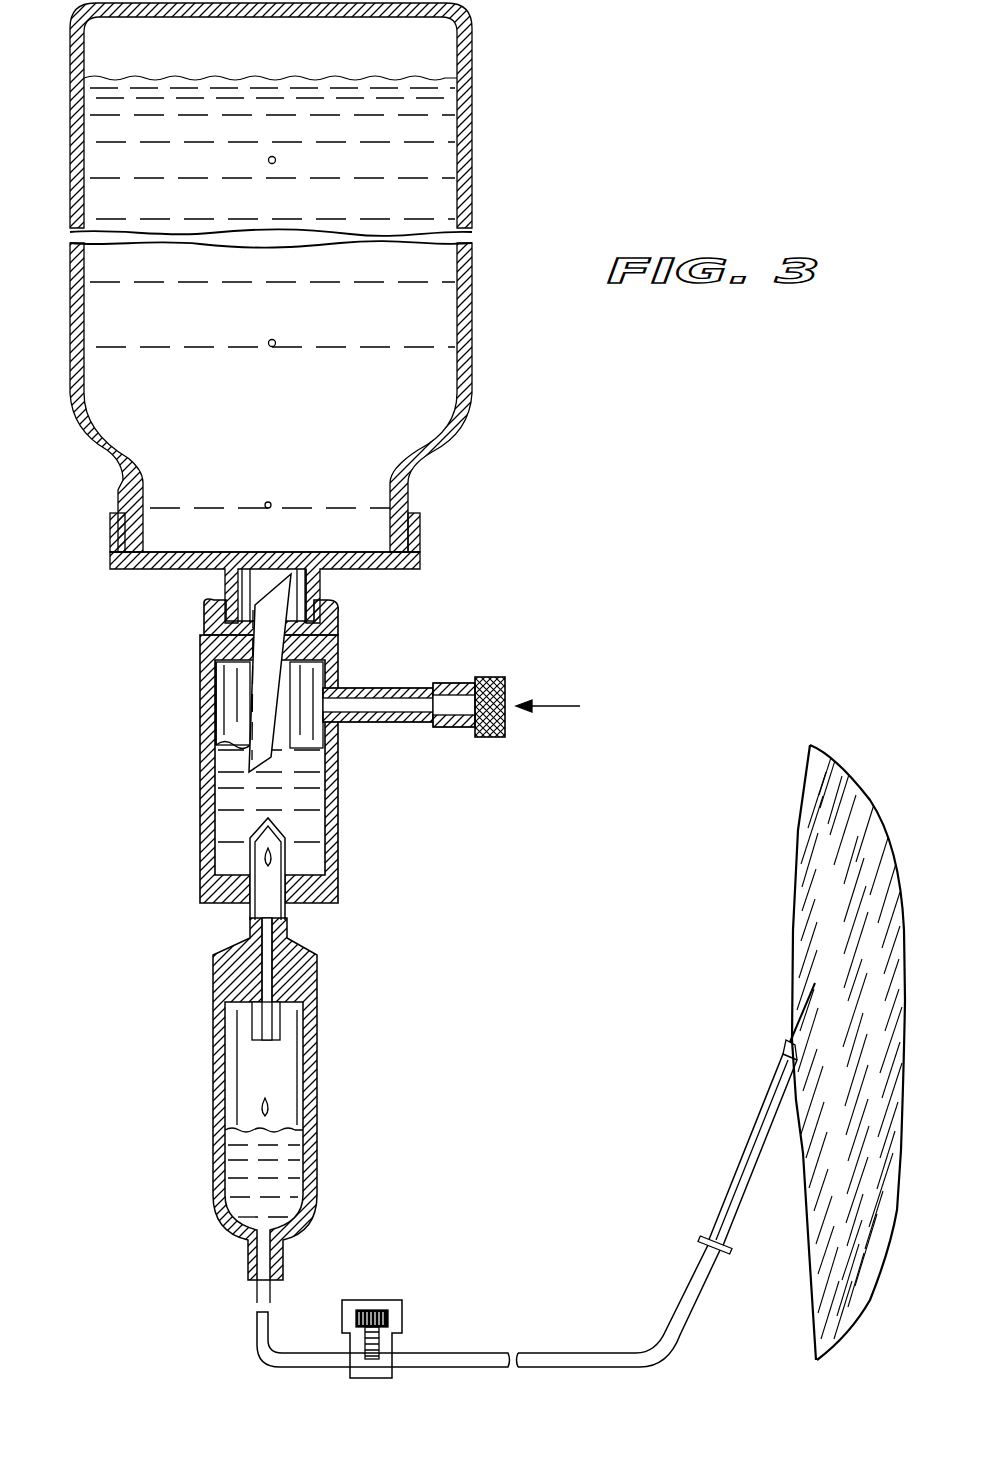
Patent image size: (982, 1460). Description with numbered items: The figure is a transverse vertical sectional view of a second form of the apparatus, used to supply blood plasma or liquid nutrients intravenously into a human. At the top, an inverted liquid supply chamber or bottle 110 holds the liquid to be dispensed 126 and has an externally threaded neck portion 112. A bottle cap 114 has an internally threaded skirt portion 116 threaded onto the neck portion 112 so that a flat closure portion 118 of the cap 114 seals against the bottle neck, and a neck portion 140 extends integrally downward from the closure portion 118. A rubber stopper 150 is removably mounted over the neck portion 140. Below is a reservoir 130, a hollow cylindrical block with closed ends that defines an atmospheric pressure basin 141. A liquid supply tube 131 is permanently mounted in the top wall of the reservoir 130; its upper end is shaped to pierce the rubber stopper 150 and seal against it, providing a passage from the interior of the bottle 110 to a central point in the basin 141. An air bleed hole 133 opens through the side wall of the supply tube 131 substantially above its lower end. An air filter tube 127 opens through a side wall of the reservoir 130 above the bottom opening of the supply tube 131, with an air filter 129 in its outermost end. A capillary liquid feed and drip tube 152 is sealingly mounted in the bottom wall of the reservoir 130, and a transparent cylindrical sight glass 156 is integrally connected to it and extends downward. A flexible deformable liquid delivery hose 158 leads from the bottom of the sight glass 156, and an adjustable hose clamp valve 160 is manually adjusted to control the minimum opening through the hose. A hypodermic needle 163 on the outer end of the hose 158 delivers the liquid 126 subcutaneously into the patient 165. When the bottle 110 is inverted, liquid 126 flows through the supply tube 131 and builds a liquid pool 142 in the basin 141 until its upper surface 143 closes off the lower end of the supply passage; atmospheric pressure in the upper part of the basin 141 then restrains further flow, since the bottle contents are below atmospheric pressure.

The liquid supply chamber or bottle 110 is at (472, 100).
The neck portion 112 is at (420, 540).
The bottle cap 114 is at (128, 570).
The skirt portion 116 is at (110, 530).
The closure portion 118 is at (180, 580).
The liquid to be dispensed 126 is at (428, 333).
The air filter tube 127 is at (390, 688).
The air filter 129 is at (507, 682).
The reservoir 130 is at (200, 817).
The liquid supply tube 131 is at (250, 695).
The air bleed hole 133 is at (293, 697).
The neck portion 140 is at (320, 590).
The atmospheric pressure basin 141 is at (308, 735).
The liquid pool 142 is at (305, 835).
The upper surface 143 is at (216, 733).
The rubber stopper 150 is at (205, 622).
The capillary liquid feed and drip tube 152 is at (255, 1033).
The sight glass 156 is at (293, 1072).
The liquid delivery hose 158 is at (555, 1353).
The hose clamp valve 160 is at (403, 1310).
The hypodermic needle 163 is at (792, 1043).
The patient 165 is at (796, 834).